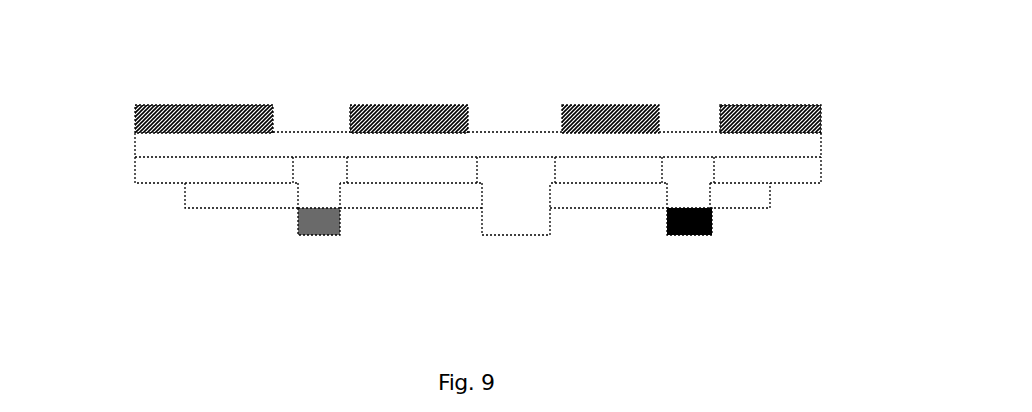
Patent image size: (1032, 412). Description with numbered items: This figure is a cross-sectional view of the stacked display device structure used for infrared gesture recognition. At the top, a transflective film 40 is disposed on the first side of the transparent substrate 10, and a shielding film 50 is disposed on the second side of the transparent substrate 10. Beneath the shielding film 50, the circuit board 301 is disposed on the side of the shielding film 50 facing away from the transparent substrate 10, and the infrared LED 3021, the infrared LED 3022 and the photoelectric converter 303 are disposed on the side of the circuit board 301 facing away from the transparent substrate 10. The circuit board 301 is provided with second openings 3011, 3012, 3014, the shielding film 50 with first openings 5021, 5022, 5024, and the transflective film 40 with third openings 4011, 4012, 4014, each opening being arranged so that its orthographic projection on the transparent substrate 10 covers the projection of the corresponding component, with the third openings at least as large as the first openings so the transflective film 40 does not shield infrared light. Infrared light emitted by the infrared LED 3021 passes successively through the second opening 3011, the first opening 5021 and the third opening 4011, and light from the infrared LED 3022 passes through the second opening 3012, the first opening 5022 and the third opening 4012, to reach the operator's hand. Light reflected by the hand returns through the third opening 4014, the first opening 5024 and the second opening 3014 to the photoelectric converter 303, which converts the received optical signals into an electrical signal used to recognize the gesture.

The transflective film 40 is at (822, 113).
The third opening 4011 is at (298, 108).
The third opening 4014 is at (490, 118).
The third opening 4012 is at (672, 108).
The transparent substrate 10 is at (822, 140).
The shielding film 50 is at (135, 170).
The first opening 5021 is at (318, 168).
The first opening 5024 is at (512, 170).
The first opening 5022 is at (683, 168).
The circuit board 301 is at (770, 196).
The second opening 3011 is at (320, 198).
The second opening 3012 is at (688, 195).
The second opening 3014 is at (512, 195).
The photoelectric converter 303 is at (550, 236).
The infrared LED 3021 is at (297, 228).
The infrared LED 3022 is at (716, 224).